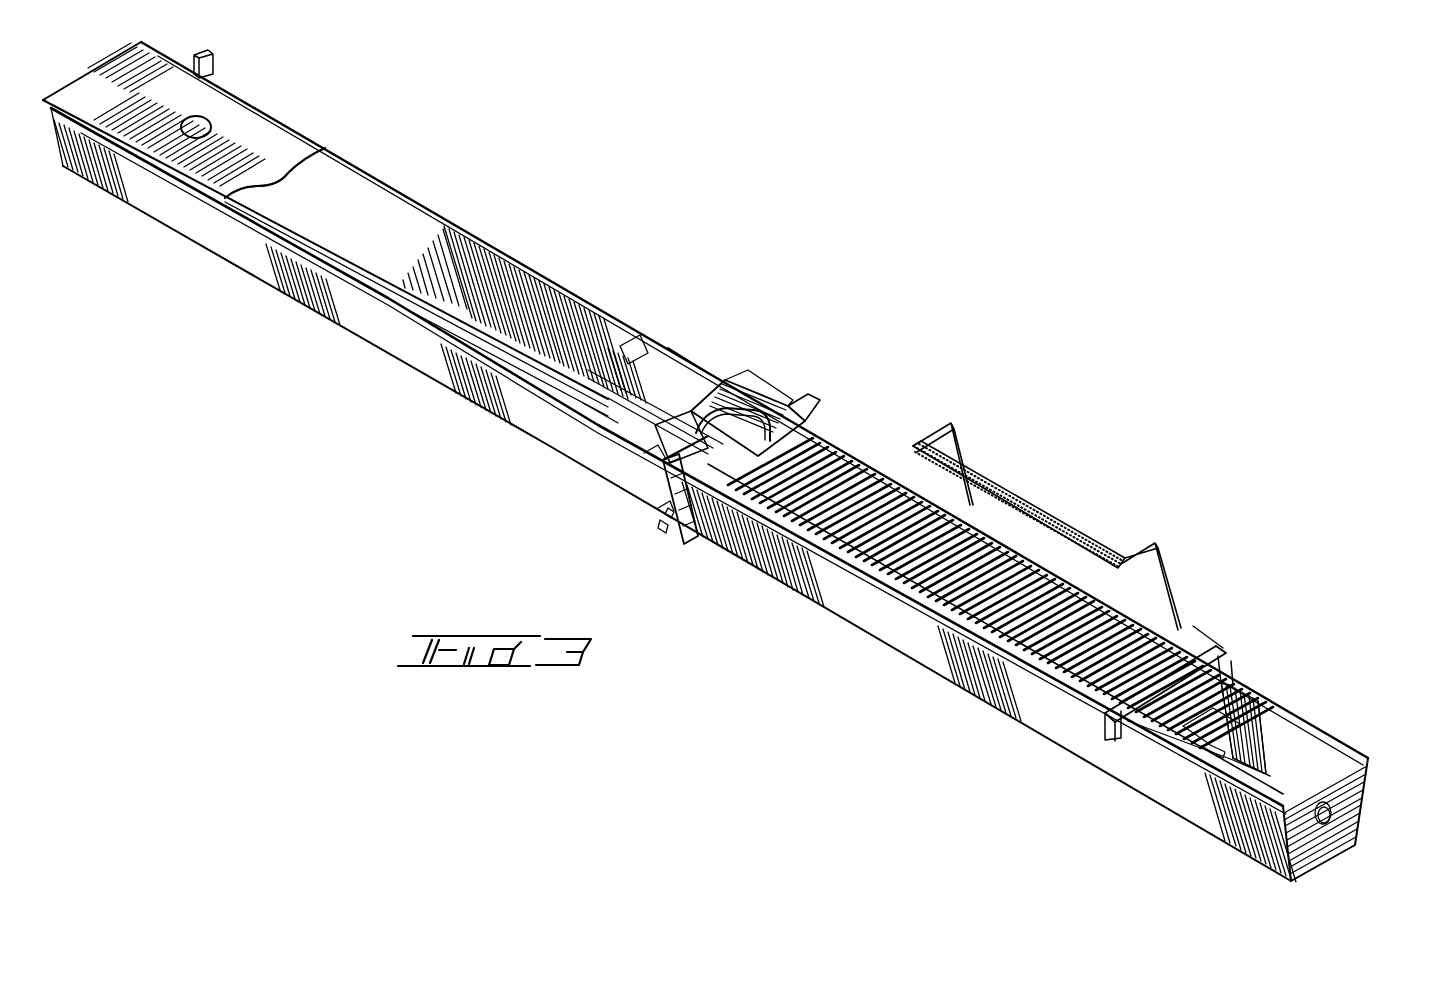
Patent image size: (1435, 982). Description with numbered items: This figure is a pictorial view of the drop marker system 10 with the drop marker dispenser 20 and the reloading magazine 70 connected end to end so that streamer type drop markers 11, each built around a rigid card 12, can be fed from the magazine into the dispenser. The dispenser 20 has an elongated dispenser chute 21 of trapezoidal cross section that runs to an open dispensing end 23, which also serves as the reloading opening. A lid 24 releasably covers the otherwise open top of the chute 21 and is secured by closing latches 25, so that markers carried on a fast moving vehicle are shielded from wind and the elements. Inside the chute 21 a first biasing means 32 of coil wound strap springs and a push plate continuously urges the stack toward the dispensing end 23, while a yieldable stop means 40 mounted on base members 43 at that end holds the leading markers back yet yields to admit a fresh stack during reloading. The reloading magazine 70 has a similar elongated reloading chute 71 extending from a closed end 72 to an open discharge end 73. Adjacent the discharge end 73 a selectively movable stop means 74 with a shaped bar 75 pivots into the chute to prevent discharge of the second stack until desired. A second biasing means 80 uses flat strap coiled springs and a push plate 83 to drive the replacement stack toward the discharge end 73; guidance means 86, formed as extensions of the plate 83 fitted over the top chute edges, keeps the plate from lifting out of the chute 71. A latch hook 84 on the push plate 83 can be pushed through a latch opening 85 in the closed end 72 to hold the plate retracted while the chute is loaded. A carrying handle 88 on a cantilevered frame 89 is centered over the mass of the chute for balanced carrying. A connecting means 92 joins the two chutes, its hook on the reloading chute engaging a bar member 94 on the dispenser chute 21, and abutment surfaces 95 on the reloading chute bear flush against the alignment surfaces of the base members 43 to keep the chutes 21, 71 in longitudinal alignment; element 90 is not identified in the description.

The drop marker system 10 is at (790, 382).
The drop markers 11 is at (690, 352).
The rigid card 12 is at (610, 418).
The drop marker dispenser 20 is at (507, 230).
The dispenser chute 21 is at (440, 240).
The dispensing end 23 is at (656, 508).
The lid 24 is at (292, 131).
The closing latches 25 is at (206, 50).
The first biasing means 32 is at (626, 345).
The yieldable stop means 40 is at (654, 522).
The base members 43 is at (692, 532).
The reloading magazine 70 is at (915, 404).
The reloading chute 71 is at (925, 642).
The closed end 72 is at (1322, 846).
The discharge end 73 is at (692, 535).
The selectively movable stop means 74 is at (808, 387).
The shaped bar 75 is at (778, 393).
The biasing means 80 is at (1280, 700).
The push plate 83 is at (1250, 704).
The latch hook 84 is at (1196, 744).
The latch opening 85 is at (1330, 807).
The guidance means 86 is at (1222, 650).
The carrying handle 88 is at (1020, 494).
The cantilevered frame 89 is at (948, 446).
The block top 90 is at (748, 372).
The connecting means 92 is at (714, 370).
The bar member 94 is at (642, 450).
The abutment surfaces 95 is at (663, 512).